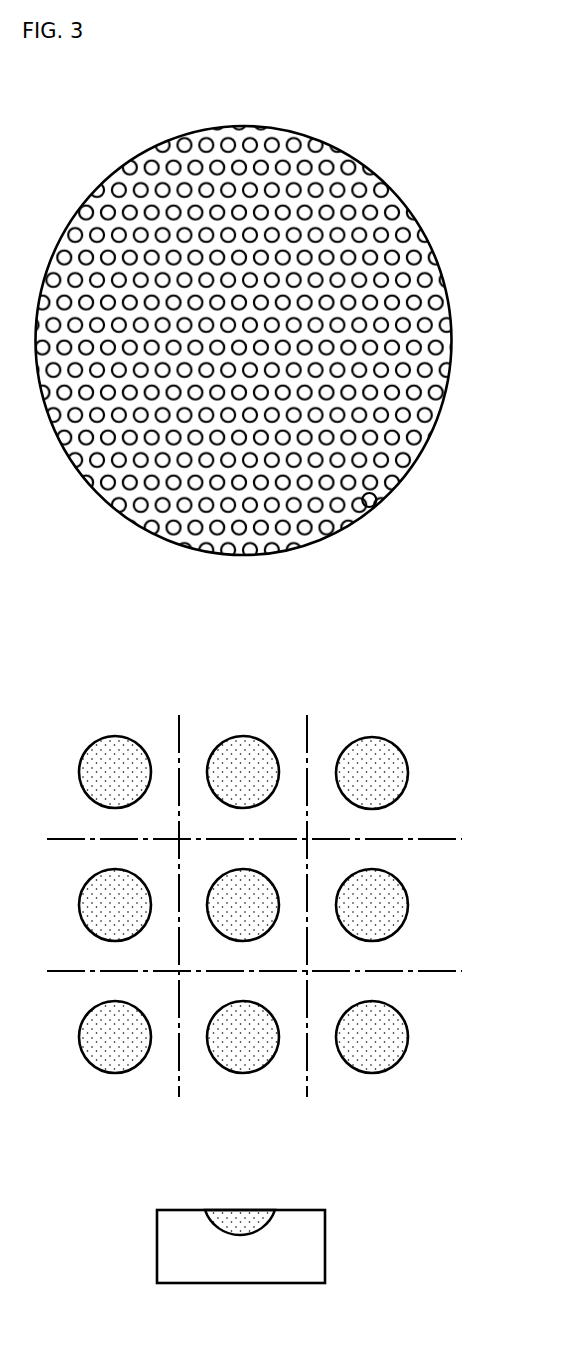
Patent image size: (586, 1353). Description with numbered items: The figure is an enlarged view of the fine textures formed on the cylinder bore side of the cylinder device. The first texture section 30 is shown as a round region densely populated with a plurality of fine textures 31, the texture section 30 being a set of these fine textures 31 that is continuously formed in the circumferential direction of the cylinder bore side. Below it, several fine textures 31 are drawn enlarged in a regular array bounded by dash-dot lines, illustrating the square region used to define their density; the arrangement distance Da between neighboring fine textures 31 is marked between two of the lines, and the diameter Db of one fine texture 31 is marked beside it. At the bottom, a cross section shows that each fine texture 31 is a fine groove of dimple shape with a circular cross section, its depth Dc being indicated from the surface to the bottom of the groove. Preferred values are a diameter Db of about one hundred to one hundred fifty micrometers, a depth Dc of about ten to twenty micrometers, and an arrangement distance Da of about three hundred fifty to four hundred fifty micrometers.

The first texture section 30 is at (422, 176).
The fine texture 31 is at (323, 538).
The arrangement distance Da is at (307, 1093).
The diameter Db is at (372, 1000).
The depth Dc is at (220, 1235).